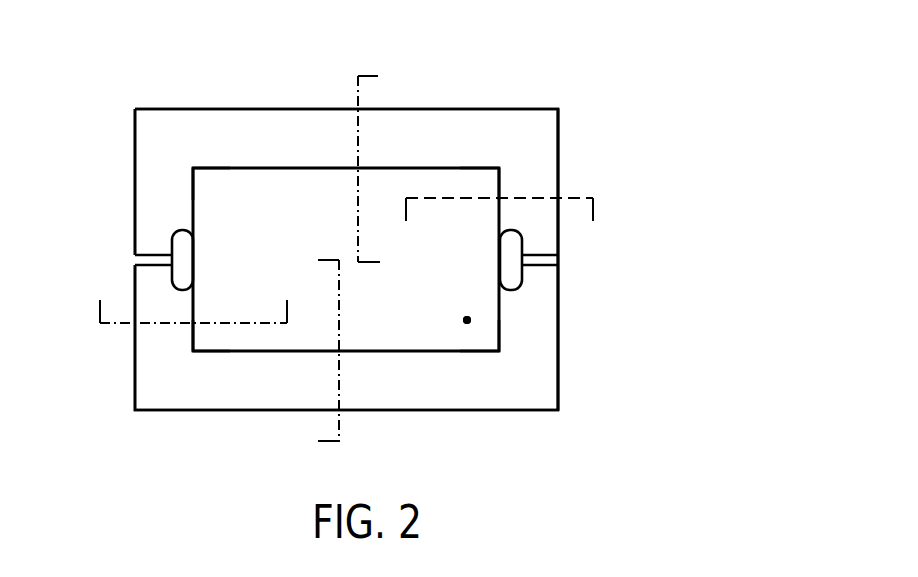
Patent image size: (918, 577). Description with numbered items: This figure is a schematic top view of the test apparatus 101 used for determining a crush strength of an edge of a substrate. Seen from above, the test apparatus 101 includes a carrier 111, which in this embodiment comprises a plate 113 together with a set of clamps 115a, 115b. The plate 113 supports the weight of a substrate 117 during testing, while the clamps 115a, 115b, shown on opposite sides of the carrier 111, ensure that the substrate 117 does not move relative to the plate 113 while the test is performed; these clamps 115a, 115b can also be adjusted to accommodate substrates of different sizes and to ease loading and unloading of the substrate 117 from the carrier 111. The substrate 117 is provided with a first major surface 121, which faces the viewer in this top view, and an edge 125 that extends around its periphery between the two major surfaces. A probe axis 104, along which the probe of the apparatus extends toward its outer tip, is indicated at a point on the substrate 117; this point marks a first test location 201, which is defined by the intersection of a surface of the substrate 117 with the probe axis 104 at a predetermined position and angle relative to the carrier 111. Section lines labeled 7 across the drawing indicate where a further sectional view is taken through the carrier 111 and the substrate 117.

The test apparatus 101 is at (572, 94).
The carrier 111 is at (598, 116).
The plate 113 is at (558, 333).
The clamp 115a is at (183, 230).
The clamp 115b is at (510, 230).
The substrate 117 is at (252, 168).
The first major surface 121 is at (275, 192).
The edge 125 is at (192, 206).
The probe axis 104 is at (470, 319).
The first test location 201 is at (467, 320).
The section line 7 is at (346, 259).